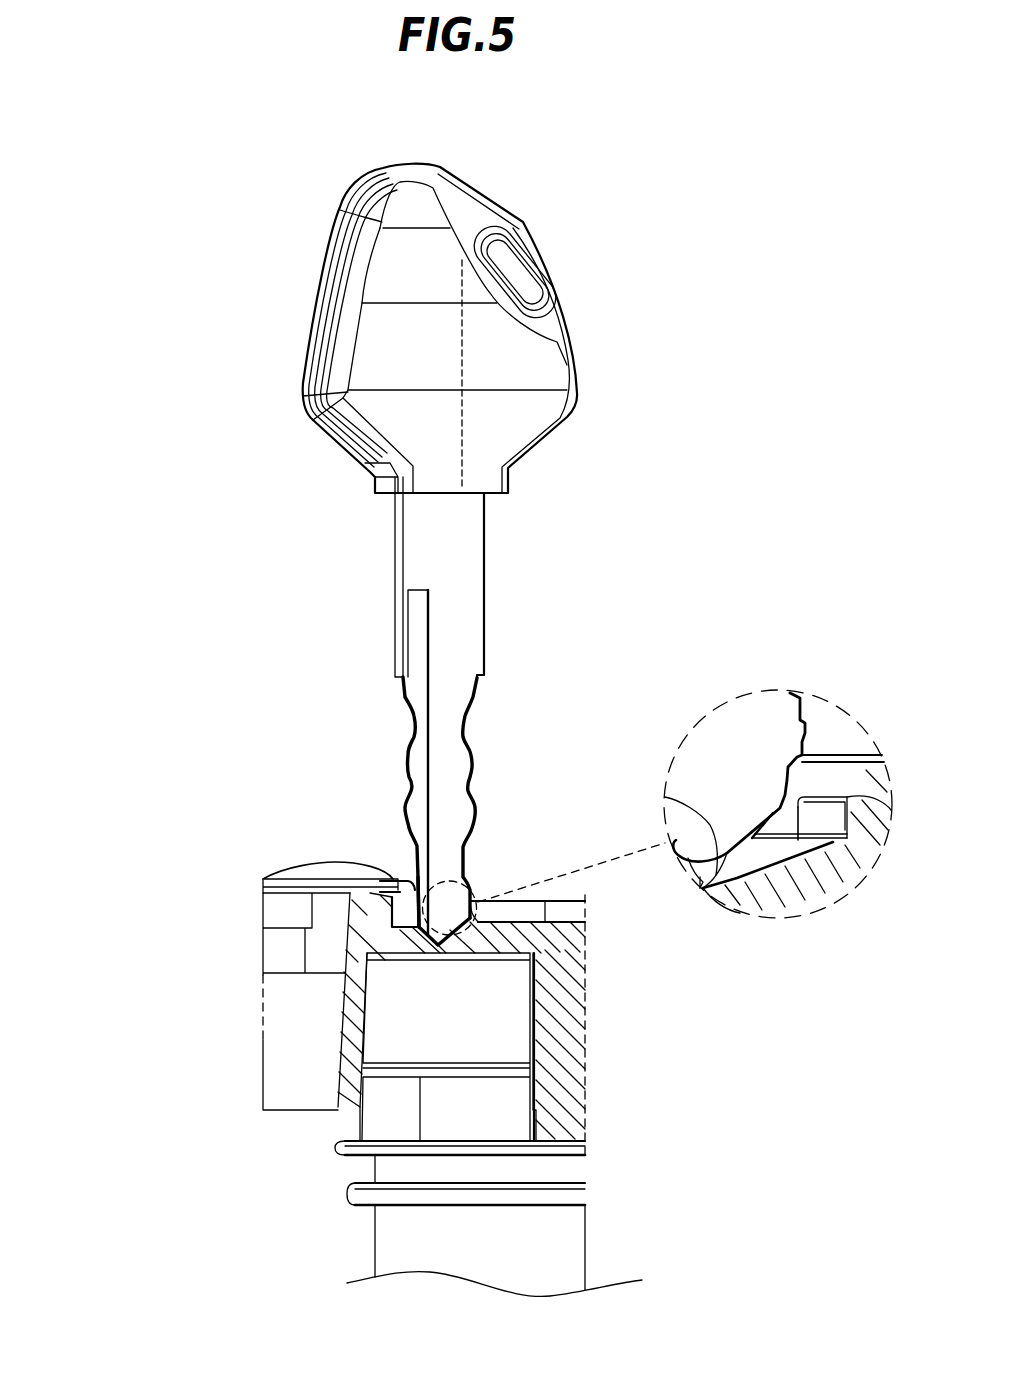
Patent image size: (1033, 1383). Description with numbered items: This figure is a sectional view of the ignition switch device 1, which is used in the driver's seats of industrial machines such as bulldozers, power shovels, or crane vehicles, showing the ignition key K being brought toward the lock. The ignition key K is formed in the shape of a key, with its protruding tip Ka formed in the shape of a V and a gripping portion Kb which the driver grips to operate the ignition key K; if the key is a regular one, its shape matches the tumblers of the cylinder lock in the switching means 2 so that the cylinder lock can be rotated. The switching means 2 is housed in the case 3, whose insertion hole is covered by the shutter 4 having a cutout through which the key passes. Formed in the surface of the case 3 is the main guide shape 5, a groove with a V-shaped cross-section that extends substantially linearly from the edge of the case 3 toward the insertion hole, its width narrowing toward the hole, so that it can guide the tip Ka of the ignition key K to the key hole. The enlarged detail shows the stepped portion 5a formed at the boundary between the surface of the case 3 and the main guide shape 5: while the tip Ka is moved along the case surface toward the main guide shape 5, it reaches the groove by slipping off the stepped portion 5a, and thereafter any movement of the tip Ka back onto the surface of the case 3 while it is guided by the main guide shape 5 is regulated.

The cylinder lock device 1 is at (118, 405).
The switching means 2 is at (375, 1224).
The case 3 is at (280, 1028).
The shutter 4 is at (303, 862).
The main guide shape 5 is at (665, 797).
The stepped portion 5a is at (827, 817).
The ignition key K is at (583, 568).
The tip Ka is at (413, 882).
The gripping portion Kb is at (555, 307).